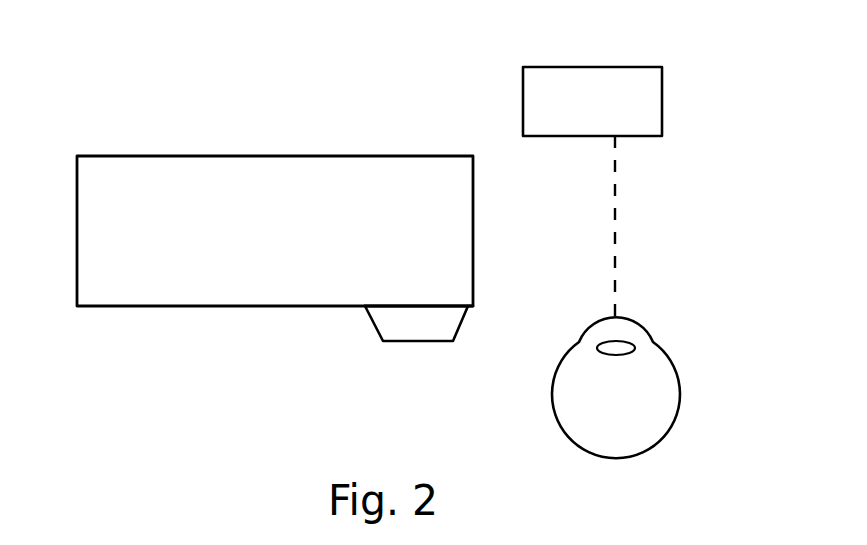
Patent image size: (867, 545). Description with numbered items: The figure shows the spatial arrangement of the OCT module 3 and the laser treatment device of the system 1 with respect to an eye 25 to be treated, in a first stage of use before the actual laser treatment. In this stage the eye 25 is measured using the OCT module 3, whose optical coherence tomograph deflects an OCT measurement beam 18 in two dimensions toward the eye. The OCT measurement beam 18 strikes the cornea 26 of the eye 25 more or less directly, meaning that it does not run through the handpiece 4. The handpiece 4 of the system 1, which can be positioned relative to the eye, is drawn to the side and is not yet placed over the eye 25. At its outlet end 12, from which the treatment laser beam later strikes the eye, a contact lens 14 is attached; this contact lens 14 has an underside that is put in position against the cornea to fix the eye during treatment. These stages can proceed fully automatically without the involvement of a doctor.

The system for laser treatment 1 is at (410, 76).
The OCT module 3 is at (640, 77).
The handpiece 4 is at (165, 178).
The outlet end 12 is at (437, 304).
The contact lens 14 is at (418, 332).
The OCT measurement beam 18 is at (617, 162).
The eye 25 is at (565, 403).
The cornea 26 is at (625, 322).